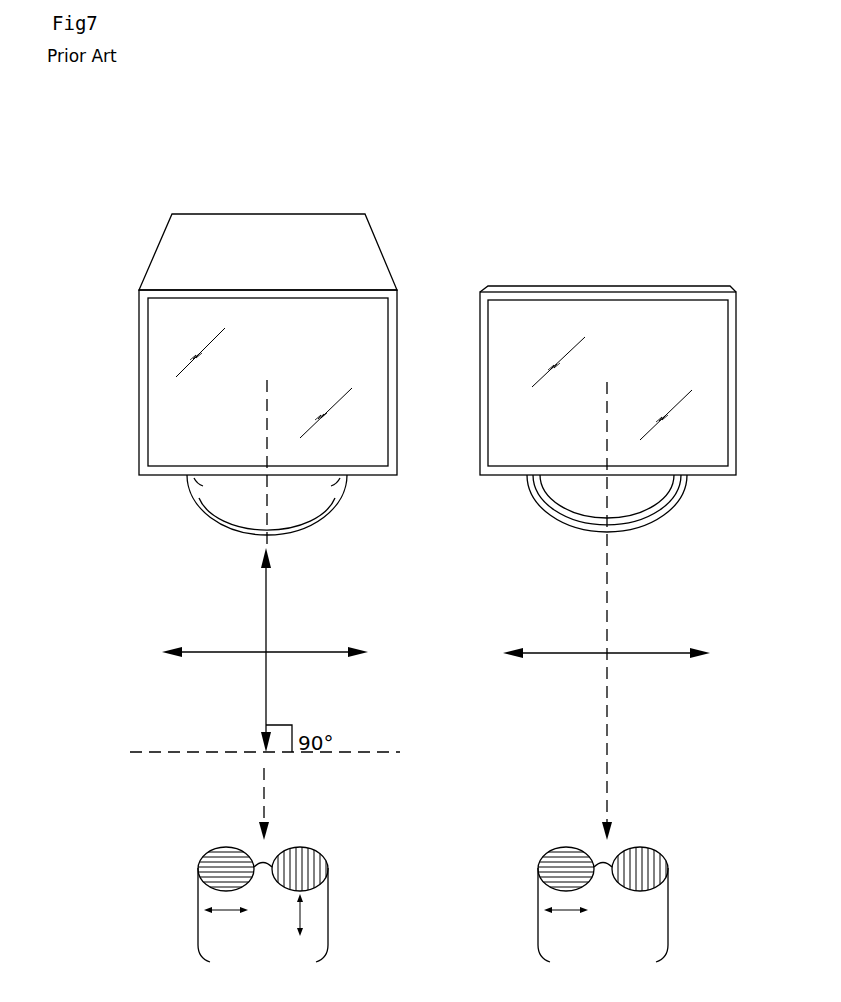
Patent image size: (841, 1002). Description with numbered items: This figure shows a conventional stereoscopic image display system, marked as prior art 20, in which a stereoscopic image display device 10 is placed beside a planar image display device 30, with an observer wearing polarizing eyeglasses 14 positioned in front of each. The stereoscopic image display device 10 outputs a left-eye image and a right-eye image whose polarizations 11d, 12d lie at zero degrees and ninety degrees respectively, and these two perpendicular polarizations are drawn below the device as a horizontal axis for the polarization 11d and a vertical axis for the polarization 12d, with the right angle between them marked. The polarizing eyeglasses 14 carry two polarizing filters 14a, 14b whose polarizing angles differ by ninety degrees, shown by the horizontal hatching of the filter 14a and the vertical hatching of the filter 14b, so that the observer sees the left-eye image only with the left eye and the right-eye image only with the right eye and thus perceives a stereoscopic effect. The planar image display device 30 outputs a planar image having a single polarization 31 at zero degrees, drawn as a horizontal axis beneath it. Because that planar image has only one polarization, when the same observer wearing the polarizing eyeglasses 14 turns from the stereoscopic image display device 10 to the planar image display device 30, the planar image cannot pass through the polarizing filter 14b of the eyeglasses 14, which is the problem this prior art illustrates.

The prior art stereoscopic display system 20 is at (103, 100).
The stereoscopic image display device 10 is at (270, 214).
The planar image display device 30 is at (608, 286).
The polarization of the right-eye image 12d is at (267, 620).
The polarization of the left-eye image 11d is at (220, 652).
The polarization of the planar image 31 is at (640, 652).
The polarizing eyeglasses 14 is at (198, 906).
The polarizing filter 14a is at (226, 850).
The polarizing filter 14b is at (300, 850).